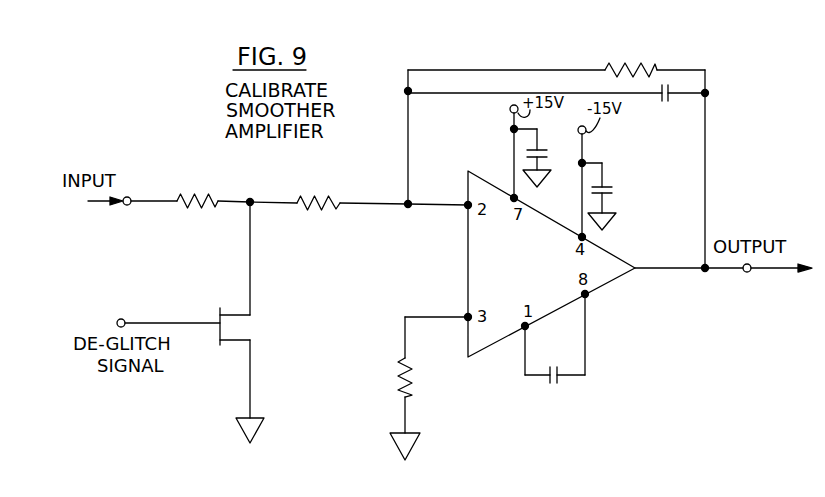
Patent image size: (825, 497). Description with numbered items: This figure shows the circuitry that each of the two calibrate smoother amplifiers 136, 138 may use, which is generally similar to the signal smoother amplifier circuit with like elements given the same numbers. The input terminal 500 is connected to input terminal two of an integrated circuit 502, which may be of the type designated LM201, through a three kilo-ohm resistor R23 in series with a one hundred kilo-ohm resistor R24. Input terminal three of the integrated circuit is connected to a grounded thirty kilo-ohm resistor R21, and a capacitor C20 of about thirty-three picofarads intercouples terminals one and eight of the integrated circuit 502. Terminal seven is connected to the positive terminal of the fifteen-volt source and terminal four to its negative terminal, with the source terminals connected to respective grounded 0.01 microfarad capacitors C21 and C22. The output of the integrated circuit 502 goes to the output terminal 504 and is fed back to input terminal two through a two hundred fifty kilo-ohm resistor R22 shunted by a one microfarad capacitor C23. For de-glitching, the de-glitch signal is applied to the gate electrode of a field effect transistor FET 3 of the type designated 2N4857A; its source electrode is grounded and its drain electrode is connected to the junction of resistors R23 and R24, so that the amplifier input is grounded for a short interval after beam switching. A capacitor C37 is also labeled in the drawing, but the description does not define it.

The input terminal 500 is at (126, 205).
The output terminal 504 is at (747, 273).
The integrated circuit 502 is at (491, 331).
The calibrate smoother amplifier 136 is at (431, 249).
The calibrate smoother amplifier 138 is at (431, 249).
The field effect transistor 3 is at (218, 313).
The grounded resistor R21 is at (393, 372).
The feedback resistor R22 is at (647, 68).
The resistor R23 is at (180, 197).
The resistor R24 is at (320, 199).
The capacitor C20 is at (555, 385).
The grounded capacitor C21 is at (574, 143).
The grounded capacitor C22 is at (608, 188).
The shunt capacitor C23 is at (665, 104).
The capacitor C37 is at (380, 494).